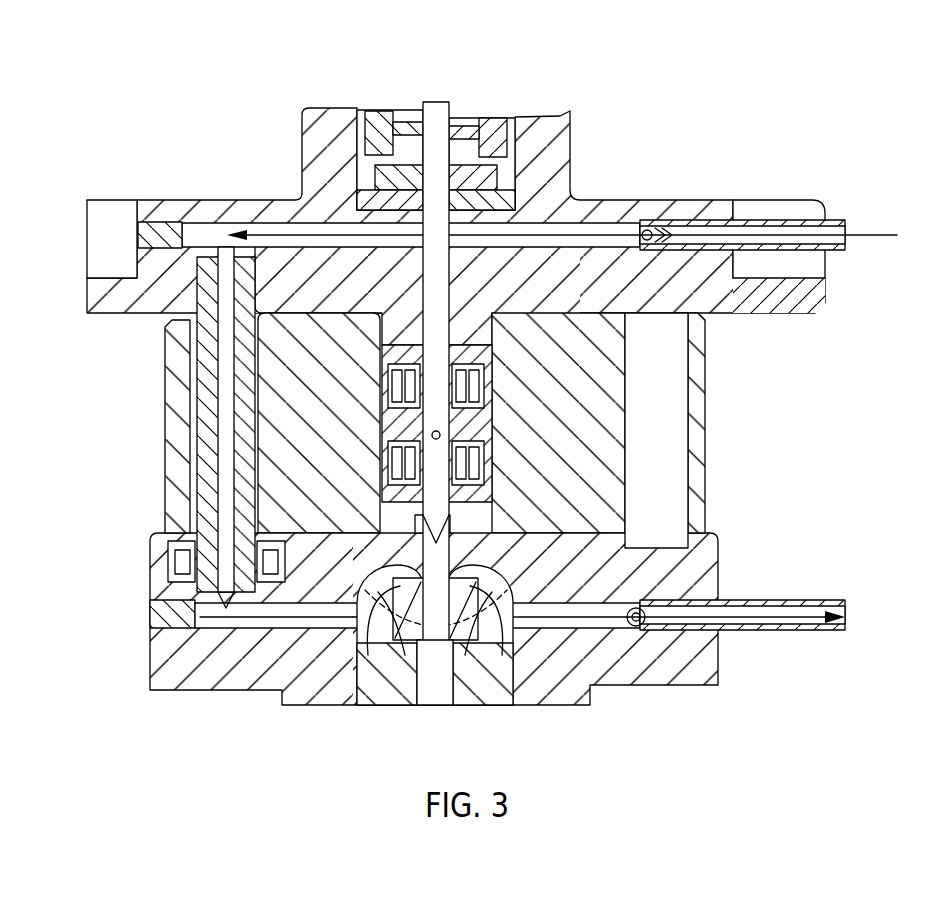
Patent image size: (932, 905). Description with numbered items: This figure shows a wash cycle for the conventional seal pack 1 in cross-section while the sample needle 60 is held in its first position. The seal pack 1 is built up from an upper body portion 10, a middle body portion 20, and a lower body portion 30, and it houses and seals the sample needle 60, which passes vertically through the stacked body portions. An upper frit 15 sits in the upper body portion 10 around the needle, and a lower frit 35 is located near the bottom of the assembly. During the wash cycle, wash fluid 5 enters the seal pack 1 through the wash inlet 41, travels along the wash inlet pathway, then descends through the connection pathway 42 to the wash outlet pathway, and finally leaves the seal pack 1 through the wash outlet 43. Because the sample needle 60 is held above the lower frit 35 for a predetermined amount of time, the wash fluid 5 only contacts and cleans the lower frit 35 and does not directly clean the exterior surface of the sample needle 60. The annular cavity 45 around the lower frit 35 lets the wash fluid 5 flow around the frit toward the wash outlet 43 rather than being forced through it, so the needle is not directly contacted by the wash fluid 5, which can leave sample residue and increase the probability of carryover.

The seal pack 1 is at (160, 100).
The wash fluid 5 is at (880, 232).
The upper body portion 10 is at (318, 184).
The upper frit 15 is at (487, 176).
The middle body portion 20 is at (176, 492).
The lower body portion 30 is at (163, 678).
The lower frit 35 is at (403, 637).
The wash inlet 41 is at (826, 232).
The connection pathway 42 is at (224, 390).
The wash outlet 43 is at (800, 612).
The cavity 45 is at (520, 620).
The sample needle 60 is at (440, 307).